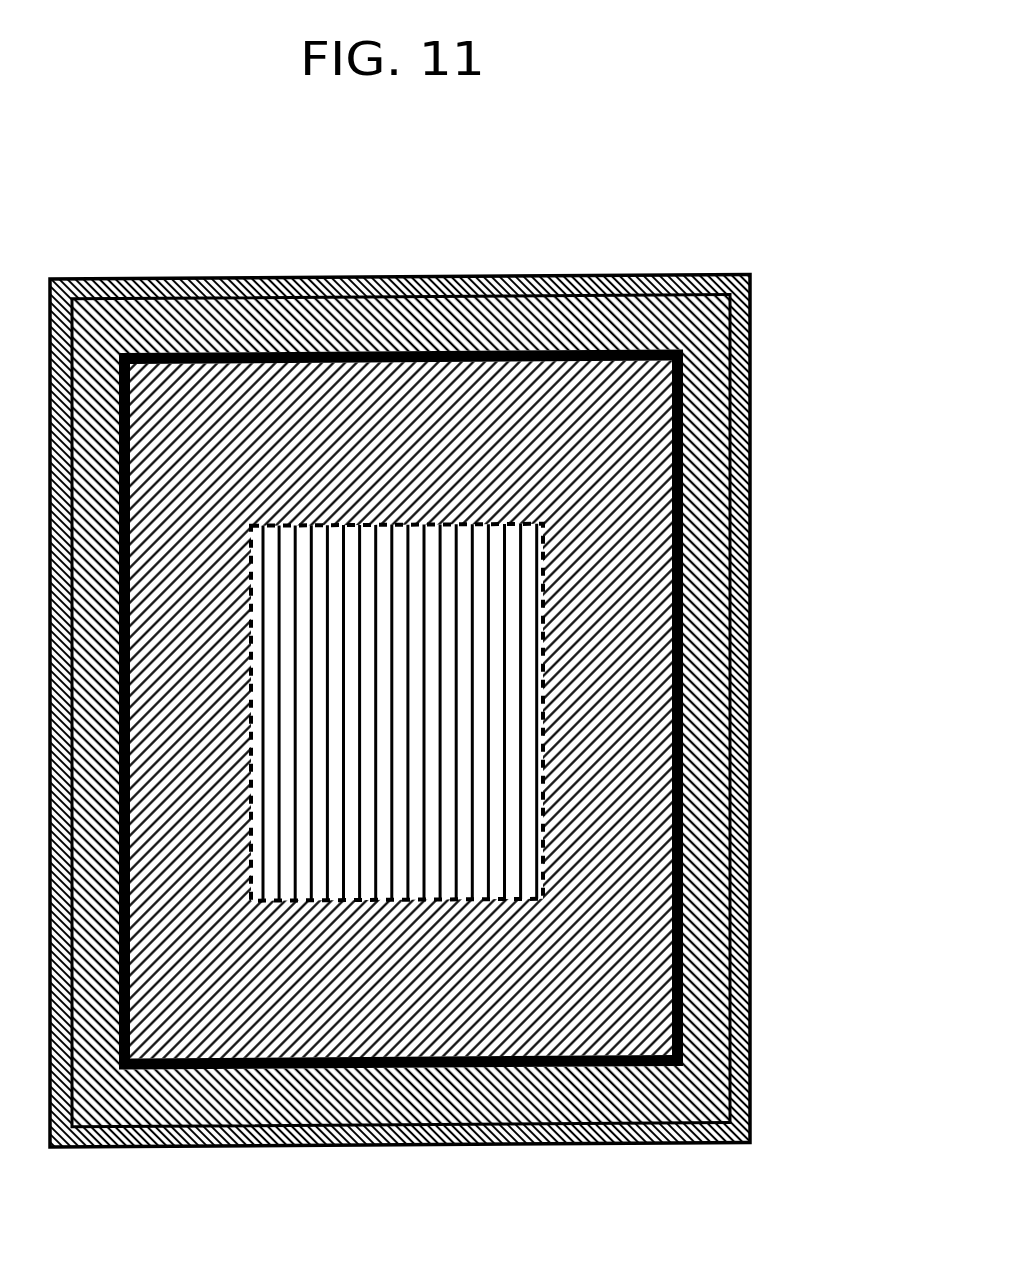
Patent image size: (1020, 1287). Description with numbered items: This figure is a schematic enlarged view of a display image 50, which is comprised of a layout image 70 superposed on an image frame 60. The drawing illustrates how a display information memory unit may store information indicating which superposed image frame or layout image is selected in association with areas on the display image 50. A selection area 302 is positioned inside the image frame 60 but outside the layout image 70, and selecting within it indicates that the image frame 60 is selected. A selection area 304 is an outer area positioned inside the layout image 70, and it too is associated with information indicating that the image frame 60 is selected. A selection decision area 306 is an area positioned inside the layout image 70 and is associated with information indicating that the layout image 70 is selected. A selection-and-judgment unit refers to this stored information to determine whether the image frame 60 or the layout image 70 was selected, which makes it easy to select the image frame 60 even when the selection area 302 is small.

The display image 50 is at (401, 711).
The image frame 60 is at (401, 711).
The layout image 70 is at (401, 709).
The selection area 302 is at (400, 710).
The selection area 304 is at (401, 709).
The selection decision area 306 is at (397, 712).